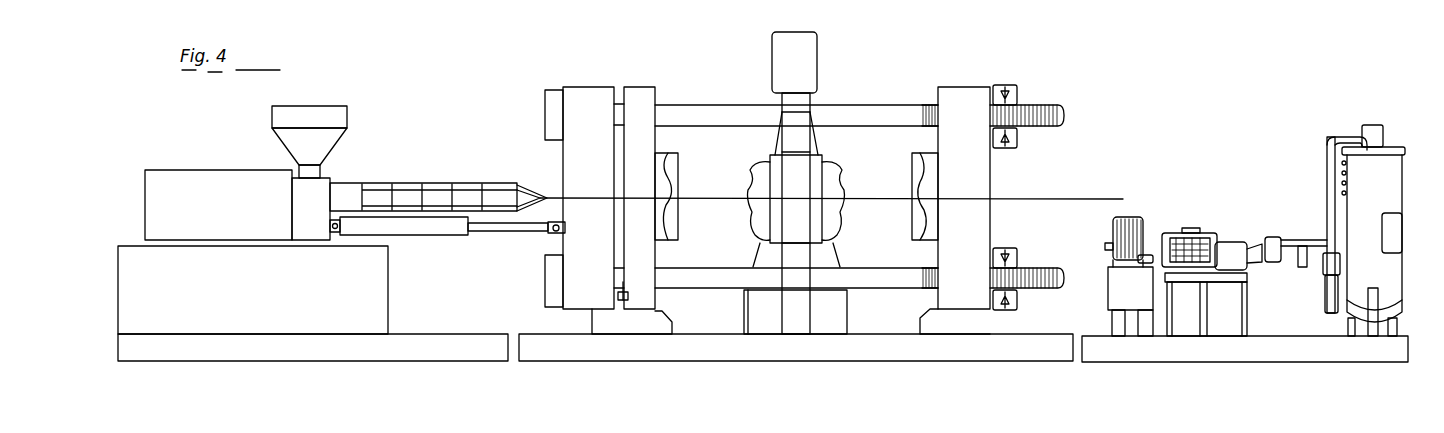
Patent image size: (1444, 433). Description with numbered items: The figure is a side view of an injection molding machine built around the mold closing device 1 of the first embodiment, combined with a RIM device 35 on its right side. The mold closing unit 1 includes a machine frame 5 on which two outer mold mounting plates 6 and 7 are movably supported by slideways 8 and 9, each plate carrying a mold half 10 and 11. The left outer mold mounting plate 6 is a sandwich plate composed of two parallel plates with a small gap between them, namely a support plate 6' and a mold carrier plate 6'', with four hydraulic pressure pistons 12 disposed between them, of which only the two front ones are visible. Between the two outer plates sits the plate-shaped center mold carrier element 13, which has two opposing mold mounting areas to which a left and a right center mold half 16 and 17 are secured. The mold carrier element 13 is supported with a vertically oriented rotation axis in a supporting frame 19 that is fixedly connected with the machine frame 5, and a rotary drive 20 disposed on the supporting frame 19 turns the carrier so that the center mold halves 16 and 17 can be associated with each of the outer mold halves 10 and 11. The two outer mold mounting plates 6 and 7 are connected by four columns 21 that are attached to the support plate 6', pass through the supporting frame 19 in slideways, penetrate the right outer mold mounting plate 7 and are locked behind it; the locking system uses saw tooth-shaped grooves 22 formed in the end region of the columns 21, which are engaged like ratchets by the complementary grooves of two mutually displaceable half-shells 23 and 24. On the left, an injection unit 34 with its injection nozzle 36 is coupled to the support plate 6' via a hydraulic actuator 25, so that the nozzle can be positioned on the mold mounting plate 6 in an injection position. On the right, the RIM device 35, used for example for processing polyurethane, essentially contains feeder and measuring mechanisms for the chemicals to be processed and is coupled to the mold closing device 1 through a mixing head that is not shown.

The mold closing unit 1 is at (893, 40).
The machine frame 5 is at (785, 348).
The outer mold mounting plate 6 is at (600, 174).
The support plate 6' is at (579, 198).
The mold carrier plate 6'' is at (639, 198).
The outer mold mounting plate 7 is at (975, 182).
The slideway 8 is at (648, 318).
The slideway 9 is at (950, 320).
The mold half 10 is at (663, 160).
The mold half 11 is at (922, 235).
The hydraulic pressure piston 12 is at (623, 300).
The center mold carrier element 13 is at (805, 188).
The center mold half 16 is at (758, 173).
The center mold half 17 is at (827, 173).
The supporting frame 19 is at (838, 328).
The rotary drive 20 is at (798, 67).
The column 21 is at (729, 112).
The saw tooth-shaped grooves 22 is at (1063, 105).
The half-shell 23 is at (1013, 97).
The half-shell 24 is at (1013, 140).
The hydraulic actuator 25 is at (468, 228).
The injection unit 34 is at (380, 135).
The RIM device 35 is at (1247, 163).
The injection nozzle 36 is at (531, 193).